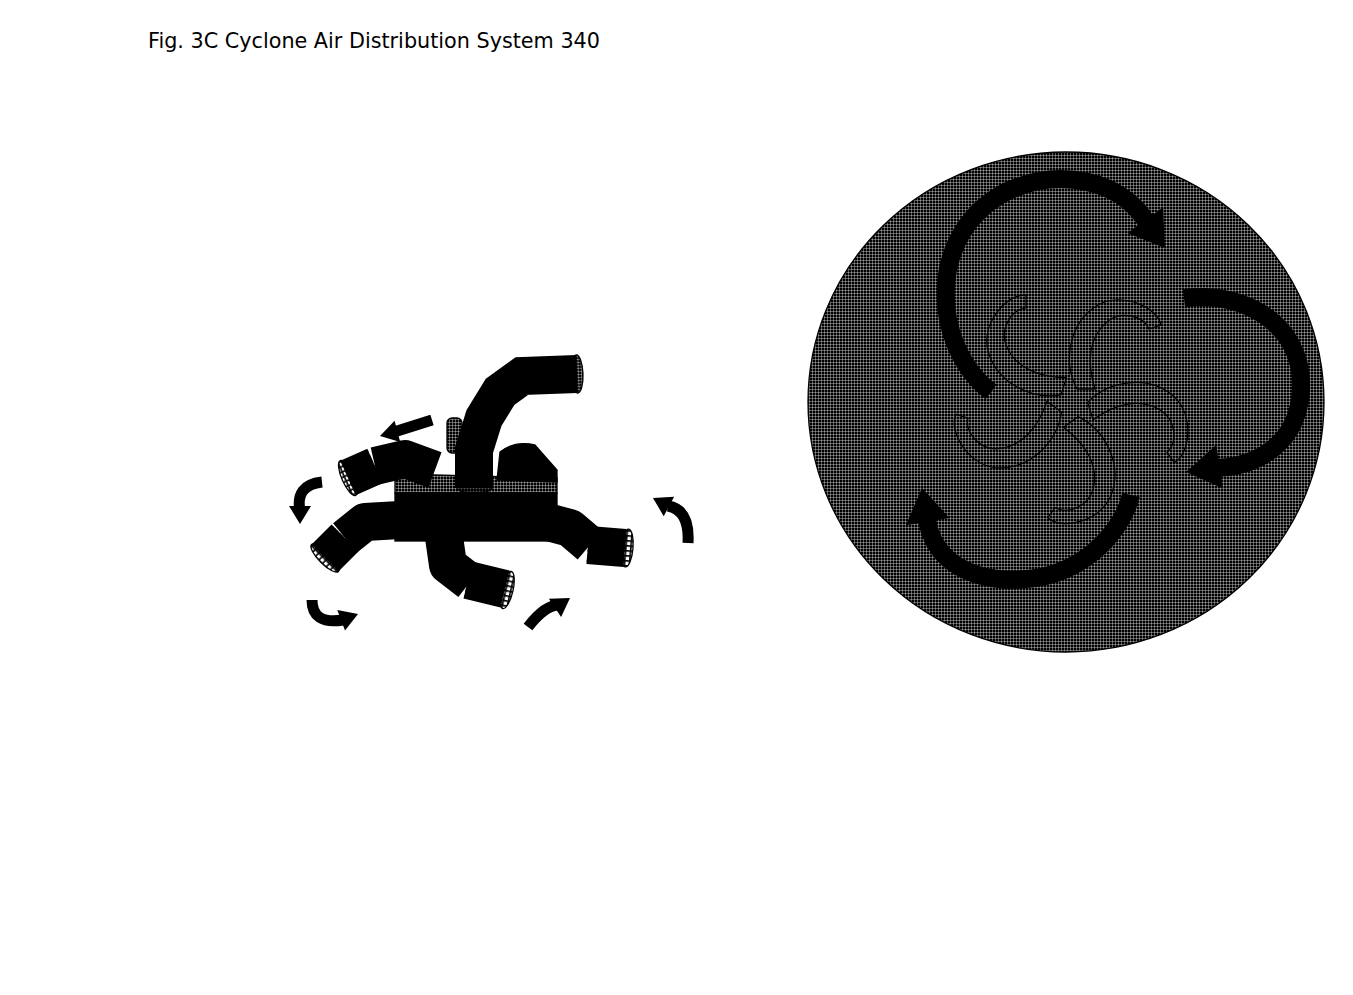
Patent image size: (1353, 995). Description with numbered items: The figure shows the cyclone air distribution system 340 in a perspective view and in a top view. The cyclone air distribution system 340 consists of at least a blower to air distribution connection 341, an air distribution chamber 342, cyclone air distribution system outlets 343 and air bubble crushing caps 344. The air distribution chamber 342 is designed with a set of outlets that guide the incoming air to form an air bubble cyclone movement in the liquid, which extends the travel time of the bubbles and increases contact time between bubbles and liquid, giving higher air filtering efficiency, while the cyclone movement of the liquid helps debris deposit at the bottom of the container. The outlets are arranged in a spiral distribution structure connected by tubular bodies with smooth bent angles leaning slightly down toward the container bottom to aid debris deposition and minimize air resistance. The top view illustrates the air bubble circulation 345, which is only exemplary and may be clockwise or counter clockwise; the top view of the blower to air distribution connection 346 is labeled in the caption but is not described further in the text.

The cyclone air distribution system 340 is at (493, 516).
The blower to air distribution connection 341 is at (498, 362).
The air distribution chamber 342 is at (515, 540).
The cyclone air distribution system outlets 343 is at (433, 573).
The air bubble crushing caps 344 is at (625, 517).
The air bubble circulation 345 is at (1173, 177).
The blower to air distribution connection 346 is at (1066, 448).